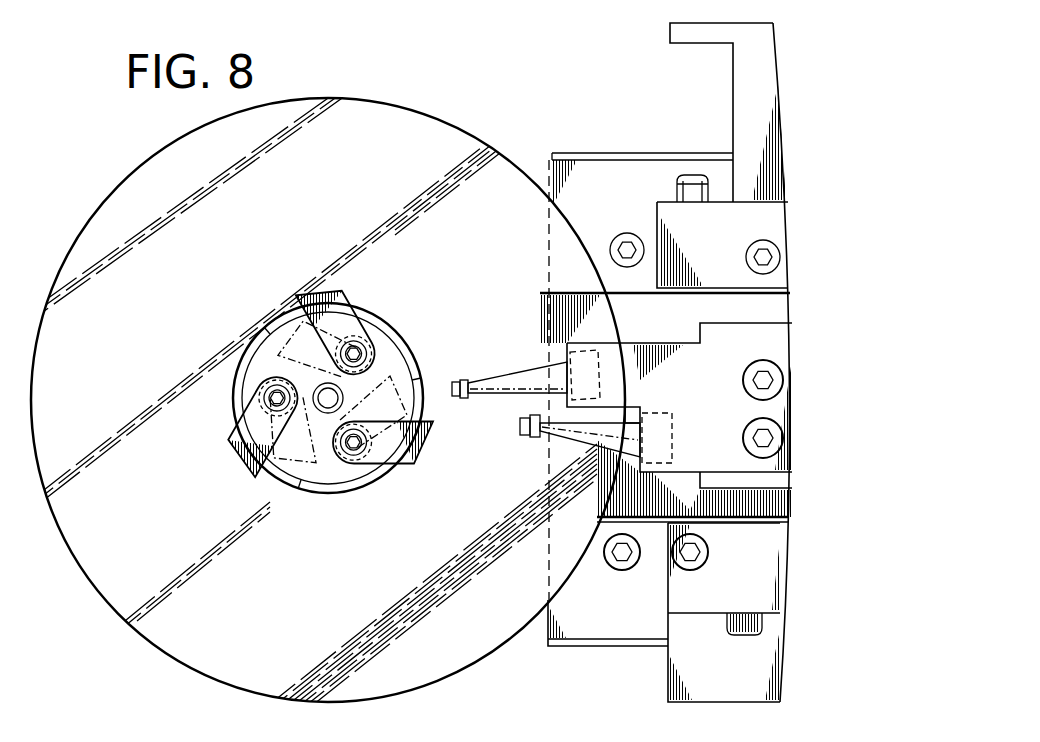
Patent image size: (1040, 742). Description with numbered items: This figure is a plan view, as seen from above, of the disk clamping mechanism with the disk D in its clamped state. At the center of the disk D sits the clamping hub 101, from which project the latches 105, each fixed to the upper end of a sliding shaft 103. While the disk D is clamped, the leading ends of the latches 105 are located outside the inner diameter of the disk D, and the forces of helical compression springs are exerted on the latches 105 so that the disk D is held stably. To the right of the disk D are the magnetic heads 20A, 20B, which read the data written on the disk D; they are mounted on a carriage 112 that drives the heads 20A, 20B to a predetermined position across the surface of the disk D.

The disk D is at (425, 130).
The cutter head 101 is at (385, 325).
The sliding shaft 103 is at (353, 467).
The latch 105 is at (243, 458).
The carriage 112 is at (640, 380).
The magnetic head 20A is at (541, 363).
The magnetic head 20B is at (563, 441).